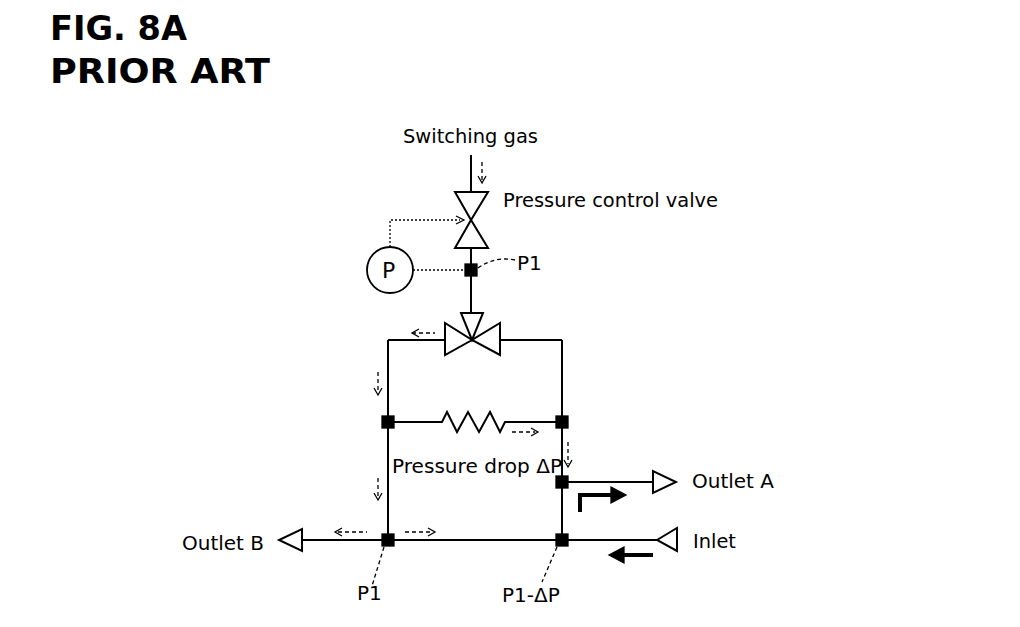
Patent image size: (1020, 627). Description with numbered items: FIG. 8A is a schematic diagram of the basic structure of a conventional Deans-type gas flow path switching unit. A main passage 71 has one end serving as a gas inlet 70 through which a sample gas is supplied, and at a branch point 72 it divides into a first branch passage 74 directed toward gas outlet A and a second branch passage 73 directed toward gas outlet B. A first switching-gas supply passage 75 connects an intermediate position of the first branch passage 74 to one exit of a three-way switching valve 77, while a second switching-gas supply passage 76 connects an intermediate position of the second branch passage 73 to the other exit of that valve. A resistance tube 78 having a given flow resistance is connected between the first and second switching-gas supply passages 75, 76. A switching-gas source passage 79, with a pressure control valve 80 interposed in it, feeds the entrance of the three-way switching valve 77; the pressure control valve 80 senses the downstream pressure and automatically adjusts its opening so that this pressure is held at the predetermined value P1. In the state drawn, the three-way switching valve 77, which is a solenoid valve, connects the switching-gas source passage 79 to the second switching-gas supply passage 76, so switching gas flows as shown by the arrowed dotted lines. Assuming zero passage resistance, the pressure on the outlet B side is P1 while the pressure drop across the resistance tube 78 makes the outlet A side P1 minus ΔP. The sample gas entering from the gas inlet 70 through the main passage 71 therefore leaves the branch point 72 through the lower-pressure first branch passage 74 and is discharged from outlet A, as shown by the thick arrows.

The gas inlet 70 is at (666, 552).
The main passage 71 is at (601, 542).
The branch point 72 is at (557, 536).
The second branch passage 73 is at (465, 543).
The first branch passage 74 is at (614, 481).
The first switching-gas supply passage 75 is at (566, 430).
The second switching-gas supply passage 76 is at (387, 465).
The three-way switching valve 77 is at (502, 330).
The resistance tube 78 is at (497, 415).
The switching-gas source passage 79 is at (472, 288).
The pressure control valve 80 is at (489, 238).